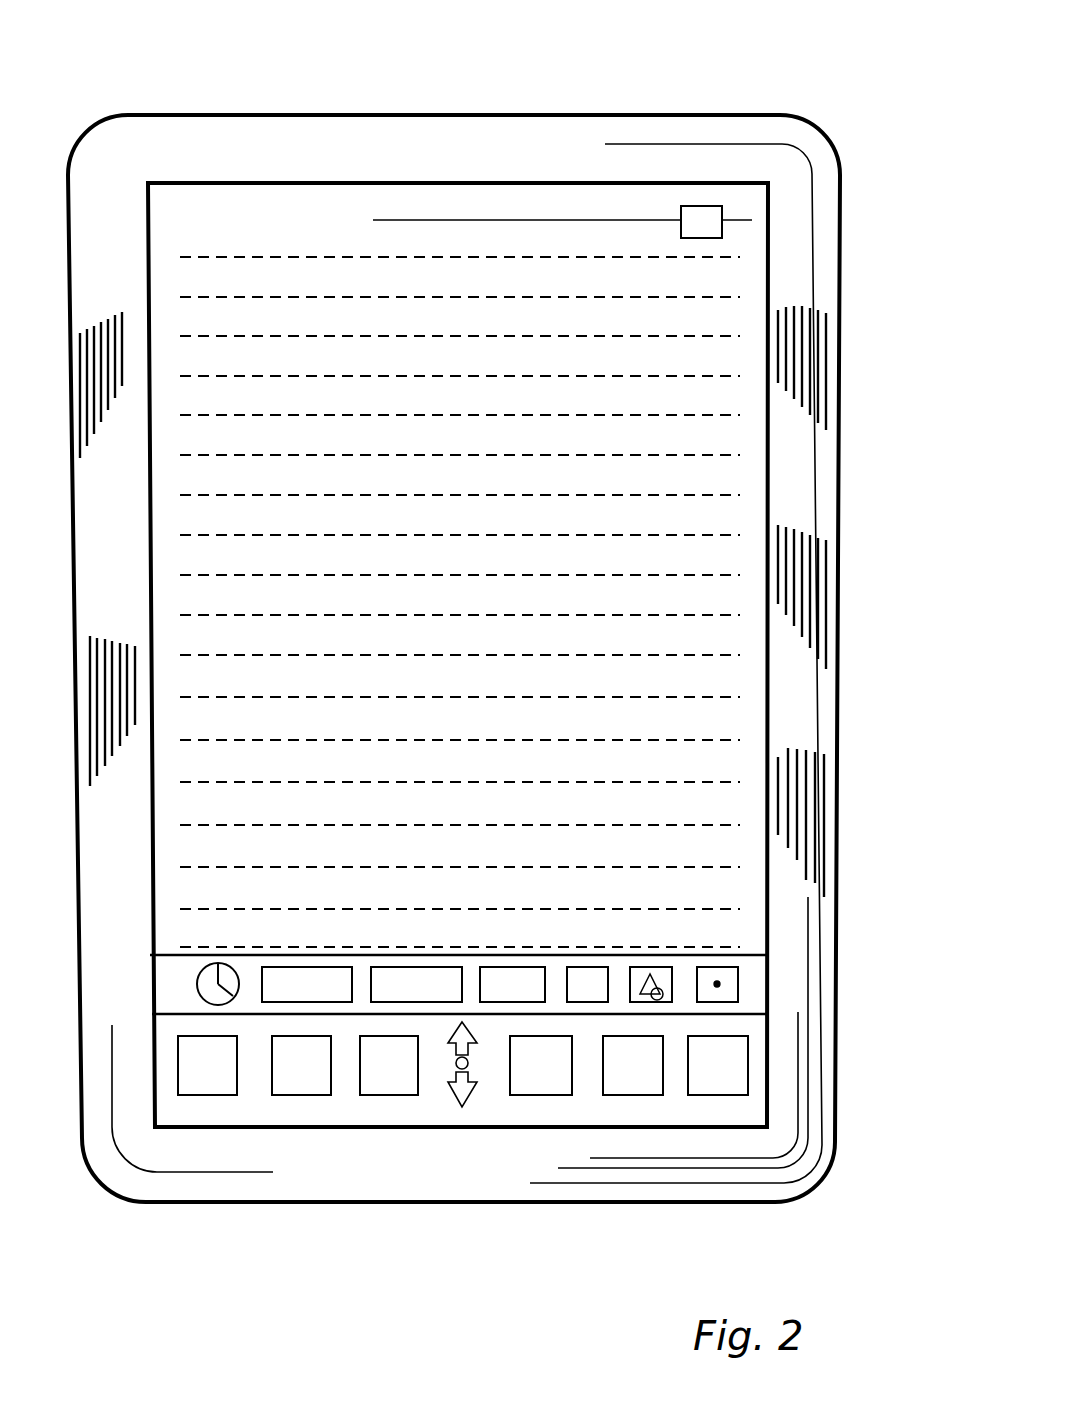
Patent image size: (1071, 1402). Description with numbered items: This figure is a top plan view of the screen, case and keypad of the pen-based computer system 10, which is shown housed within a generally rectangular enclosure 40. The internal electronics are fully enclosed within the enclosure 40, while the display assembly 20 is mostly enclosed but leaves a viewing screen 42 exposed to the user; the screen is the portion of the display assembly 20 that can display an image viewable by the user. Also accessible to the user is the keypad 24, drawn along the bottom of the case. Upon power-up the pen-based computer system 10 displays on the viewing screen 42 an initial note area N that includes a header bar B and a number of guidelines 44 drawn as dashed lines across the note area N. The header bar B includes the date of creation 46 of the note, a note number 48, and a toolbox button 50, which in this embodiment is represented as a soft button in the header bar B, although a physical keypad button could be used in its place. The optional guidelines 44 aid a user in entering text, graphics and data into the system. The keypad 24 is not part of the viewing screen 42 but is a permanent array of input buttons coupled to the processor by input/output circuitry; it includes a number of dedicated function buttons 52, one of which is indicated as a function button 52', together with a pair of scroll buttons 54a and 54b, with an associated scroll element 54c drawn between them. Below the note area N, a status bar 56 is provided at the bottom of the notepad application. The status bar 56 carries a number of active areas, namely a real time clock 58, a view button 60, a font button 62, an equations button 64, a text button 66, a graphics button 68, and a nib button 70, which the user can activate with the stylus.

The pen-based computer system 10 is at (781, 71).
The display assembly 20 is at (670, 558).
The keypad 24 is at (747, 1117).
The enclosure 40 is at (790, 495).
The viewing screen 42 is at (682, 675).
The guidelines 44 is at (705, 414).
The date of creation 46 is at (240, 193).
The note number 48 is at (340, 195).
The toolbox button 50 is at (695, 198).
The dedicated function buttons 52 is at (463, 1142).
The selected soft button 52' is at (317, 1142).
The scroll button 54a is at (447, 1045).
The scroll button 54b is at (470, 1095).
The scroll knob 54c is at (470, 1064).
The status bar 56 is at (753, 988).
The real time clock 58 is at (228, 972).
The view button 60 is at (308, 970).
The font button 62 is at (405, 970).
The equations button 64 is at (508, 970).
The text button 66 is at (578, 970).
The graphics button 68 is at (645, 970).
The nib button 70 is at (703, 970).
The header bar B is at (389, 214).
The note area N is at (443, 607).